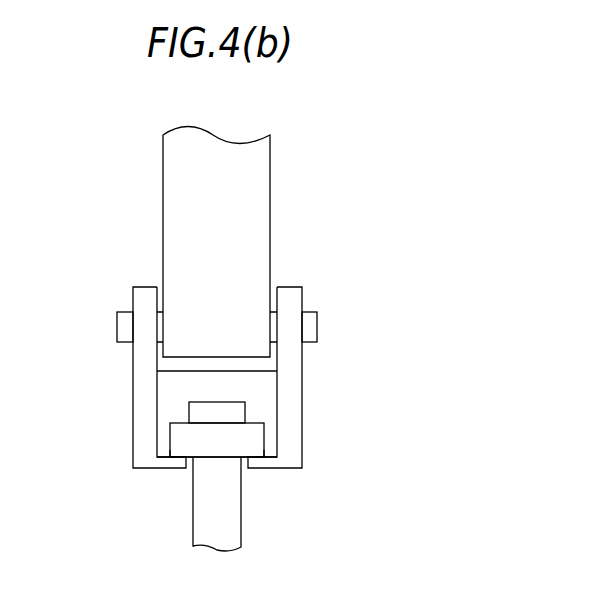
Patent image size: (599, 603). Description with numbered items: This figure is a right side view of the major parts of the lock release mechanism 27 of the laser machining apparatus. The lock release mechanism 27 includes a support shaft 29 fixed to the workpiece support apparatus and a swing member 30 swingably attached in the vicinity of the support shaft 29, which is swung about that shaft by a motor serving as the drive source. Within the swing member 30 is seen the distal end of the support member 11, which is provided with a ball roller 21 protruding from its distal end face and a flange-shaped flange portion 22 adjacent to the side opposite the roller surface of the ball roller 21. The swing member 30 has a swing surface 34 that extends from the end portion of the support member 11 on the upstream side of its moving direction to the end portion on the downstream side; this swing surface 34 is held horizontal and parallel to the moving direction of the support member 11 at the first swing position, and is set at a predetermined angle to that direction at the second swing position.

The lock release mechanism 27 is at (322, 272).
The support shaft 29 is at (317, 325).
The ball roller 21 is at (245, 404).
The swing member 30 is at (295, 447).
The swing surface 34 is at (257, 453).
The flange portion 22 is at (207, 452).
The support member 11 is at (241, 515).